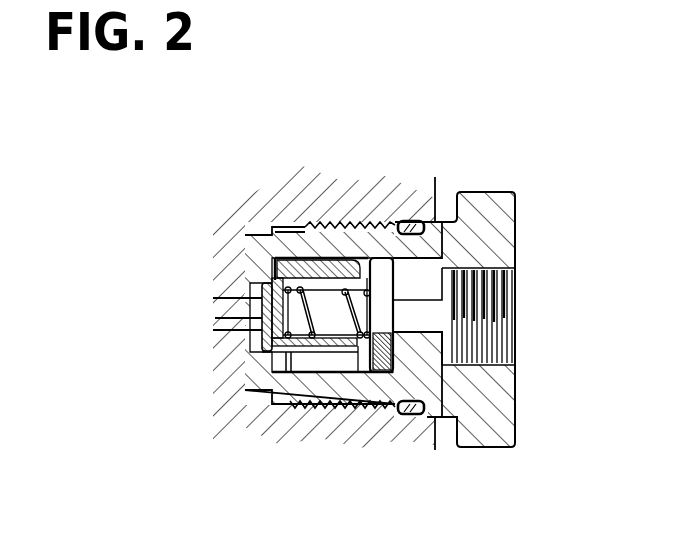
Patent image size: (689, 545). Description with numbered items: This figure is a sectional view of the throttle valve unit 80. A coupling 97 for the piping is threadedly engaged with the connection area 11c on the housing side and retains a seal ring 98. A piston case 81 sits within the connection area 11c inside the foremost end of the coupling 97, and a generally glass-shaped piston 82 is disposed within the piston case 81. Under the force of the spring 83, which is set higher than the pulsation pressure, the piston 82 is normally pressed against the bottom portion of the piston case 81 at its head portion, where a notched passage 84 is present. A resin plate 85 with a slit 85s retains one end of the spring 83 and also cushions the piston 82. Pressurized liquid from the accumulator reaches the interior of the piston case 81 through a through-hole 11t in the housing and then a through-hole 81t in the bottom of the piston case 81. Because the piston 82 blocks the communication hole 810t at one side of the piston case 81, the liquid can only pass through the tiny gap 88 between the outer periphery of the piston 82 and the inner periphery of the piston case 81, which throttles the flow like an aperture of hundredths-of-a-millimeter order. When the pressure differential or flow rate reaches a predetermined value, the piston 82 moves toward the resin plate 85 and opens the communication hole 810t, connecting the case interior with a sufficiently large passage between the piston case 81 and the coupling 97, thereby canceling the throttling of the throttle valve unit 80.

The throttle valve unit 80 is at (370, 178).
The piston case 81 is at (306, 257).
The piston 82 is at (262, 282).
The spring 83 is at (368, 257).
The notched passage 84 is at (255, 312).
The resin plate 85 is at (395, 355).
The slit 85s is at (380, 278).
The tiny gap 88 is at (330, 406).
The coupling 97 is at (478, 190).
The seal ring 98 is at (426, 414).
The through-hole 11t is at (214, 298).
The through-hole 81t is at (215, 318).
The communication hole 810t is at (288, 376).
The connection area 11c is at (250, 412).